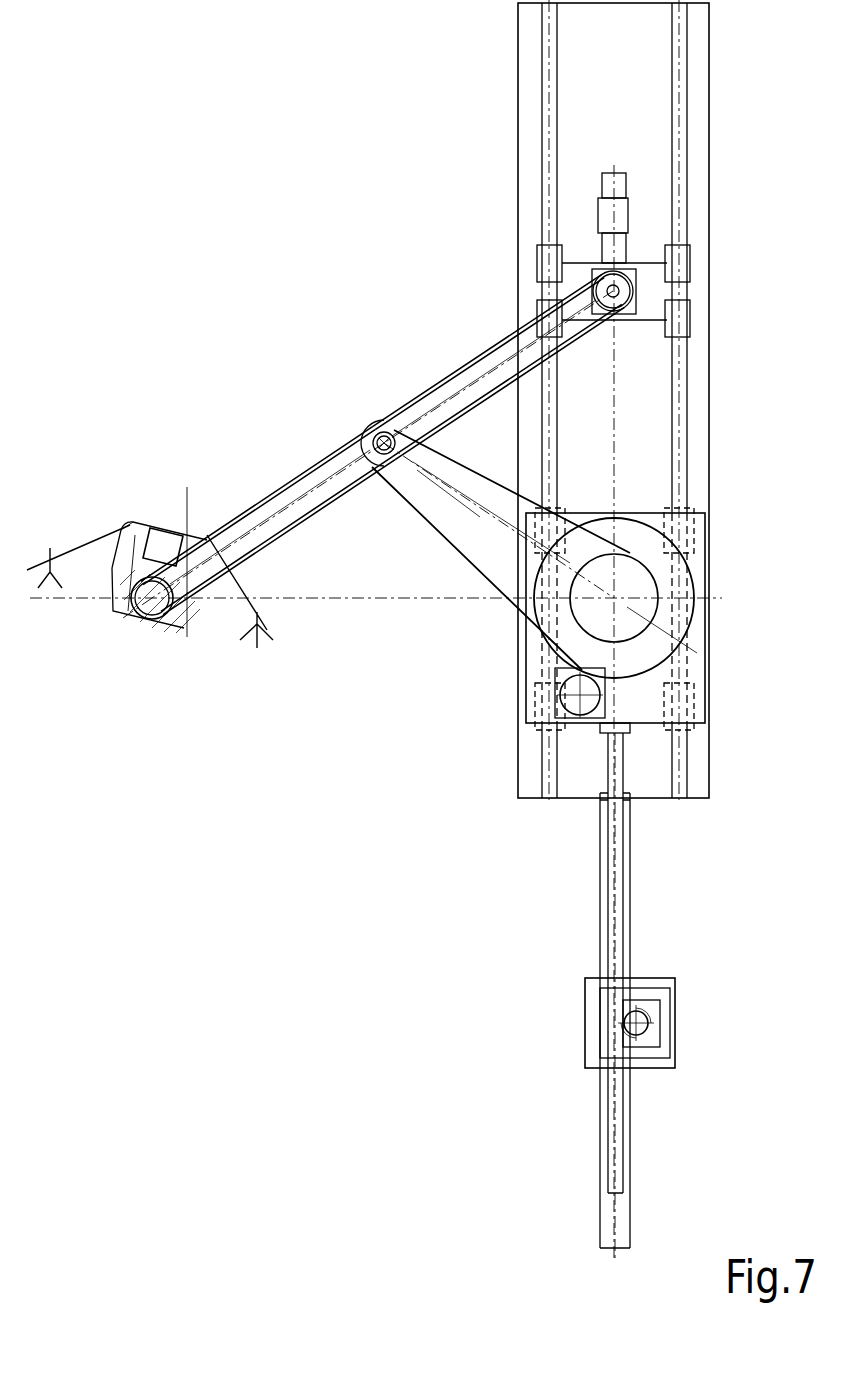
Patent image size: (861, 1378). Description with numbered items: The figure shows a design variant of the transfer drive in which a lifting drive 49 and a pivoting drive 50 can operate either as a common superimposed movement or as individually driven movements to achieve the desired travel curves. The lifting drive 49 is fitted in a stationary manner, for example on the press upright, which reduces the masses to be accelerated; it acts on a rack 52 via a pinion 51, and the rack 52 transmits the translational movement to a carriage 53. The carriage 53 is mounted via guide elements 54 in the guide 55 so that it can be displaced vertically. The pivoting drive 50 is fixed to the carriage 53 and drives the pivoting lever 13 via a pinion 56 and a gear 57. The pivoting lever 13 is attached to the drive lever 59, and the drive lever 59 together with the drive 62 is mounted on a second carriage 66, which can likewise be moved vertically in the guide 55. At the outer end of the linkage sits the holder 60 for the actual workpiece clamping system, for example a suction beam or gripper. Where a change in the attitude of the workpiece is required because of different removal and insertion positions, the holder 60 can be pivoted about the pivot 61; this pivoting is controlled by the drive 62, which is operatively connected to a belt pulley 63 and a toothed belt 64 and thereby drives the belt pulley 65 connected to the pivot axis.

The pivoting lever 13 is at (493, 540).
The lifting drive 49 is at (655, 1010).
The pivoting drive 50 is at (572, 705).
The pinion 51 is at (645, 1033).
The rack 52 is at (620, 958).
The carriage 53 is at (695, 663).
The guide elements 54 is at (690, 707).
The guide 55 is at (683, 423).
The pinion 56 is at (555, 682).
The gear 57 is at (692, 583).
The drive lever 59 is at (440, 395).
The holder 60 is at (157, 527).
The pivot 61 is at (153, 600).
The drive 62 is at (620, 190).
The belt pulley 63 is at (597, 290).
The toothed belt 64 is at (283, 487).
The belt pulley 65 is at (167, 630).
The carriage 66 is at (666, 300).